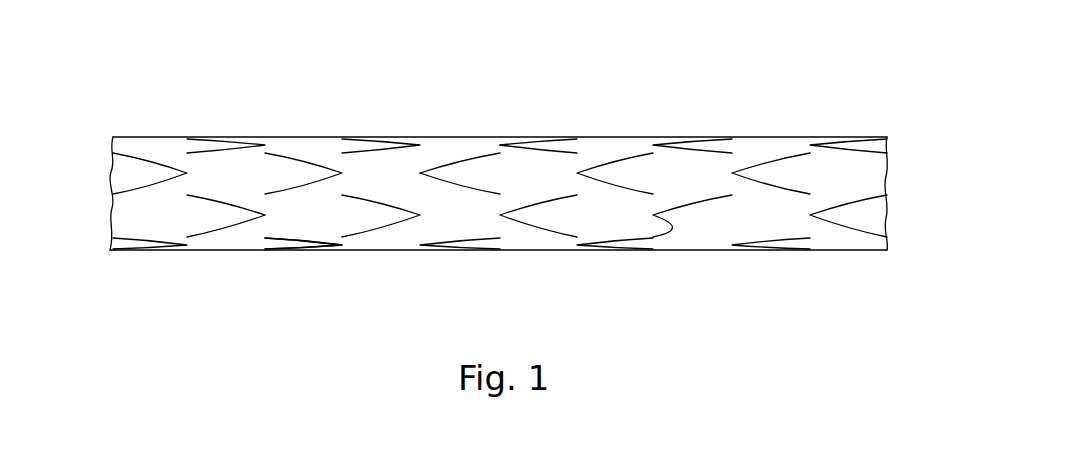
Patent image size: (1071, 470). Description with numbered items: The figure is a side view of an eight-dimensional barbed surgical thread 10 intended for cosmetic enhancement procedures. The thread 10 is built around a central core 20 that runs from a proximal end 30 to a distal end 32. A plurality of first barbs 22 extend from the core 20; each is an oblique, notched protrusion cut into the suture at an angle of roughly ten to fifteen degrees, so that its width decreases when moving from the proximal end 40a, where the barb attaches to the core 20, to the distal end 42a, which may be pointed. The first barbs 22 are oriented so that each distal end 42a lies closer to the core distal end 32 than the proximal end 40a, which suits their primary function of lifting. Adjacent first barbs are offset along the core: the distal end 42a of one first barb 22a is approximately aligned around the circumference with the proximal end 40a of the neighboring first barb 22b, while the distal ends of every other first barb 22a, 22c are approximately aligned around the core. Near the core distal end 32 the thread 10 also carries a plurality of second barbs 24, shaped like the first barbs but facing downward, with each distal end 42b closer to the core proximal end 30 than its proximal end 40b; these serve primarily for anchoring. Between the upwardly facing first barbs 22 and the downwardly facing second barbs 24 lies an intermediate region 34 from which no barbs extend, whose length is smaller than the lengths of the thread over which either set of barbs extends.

The eight-dimensional barbed surgical thread 10 is at (723, 343).
The central core 20 is at (760, 145).
The first barbs 22 is at (402, 143).
The first barb 22a is at (545, 142).
The first barb 22b is at (457, 160).
The first barb 22c is at (510, 215).
The second barbs 24 is at (220, 142).
The proximal end 30 is at (880, 245).
The distal end 32 is at (127, 213).
The intermediate region 34 is at (353, 243).
The proximal end 40a is at (473, 191).
The proximal end 40b is at (197, 235).
The distal end 42a is at (503, 140).
The distal end 42b is at (258, 218).